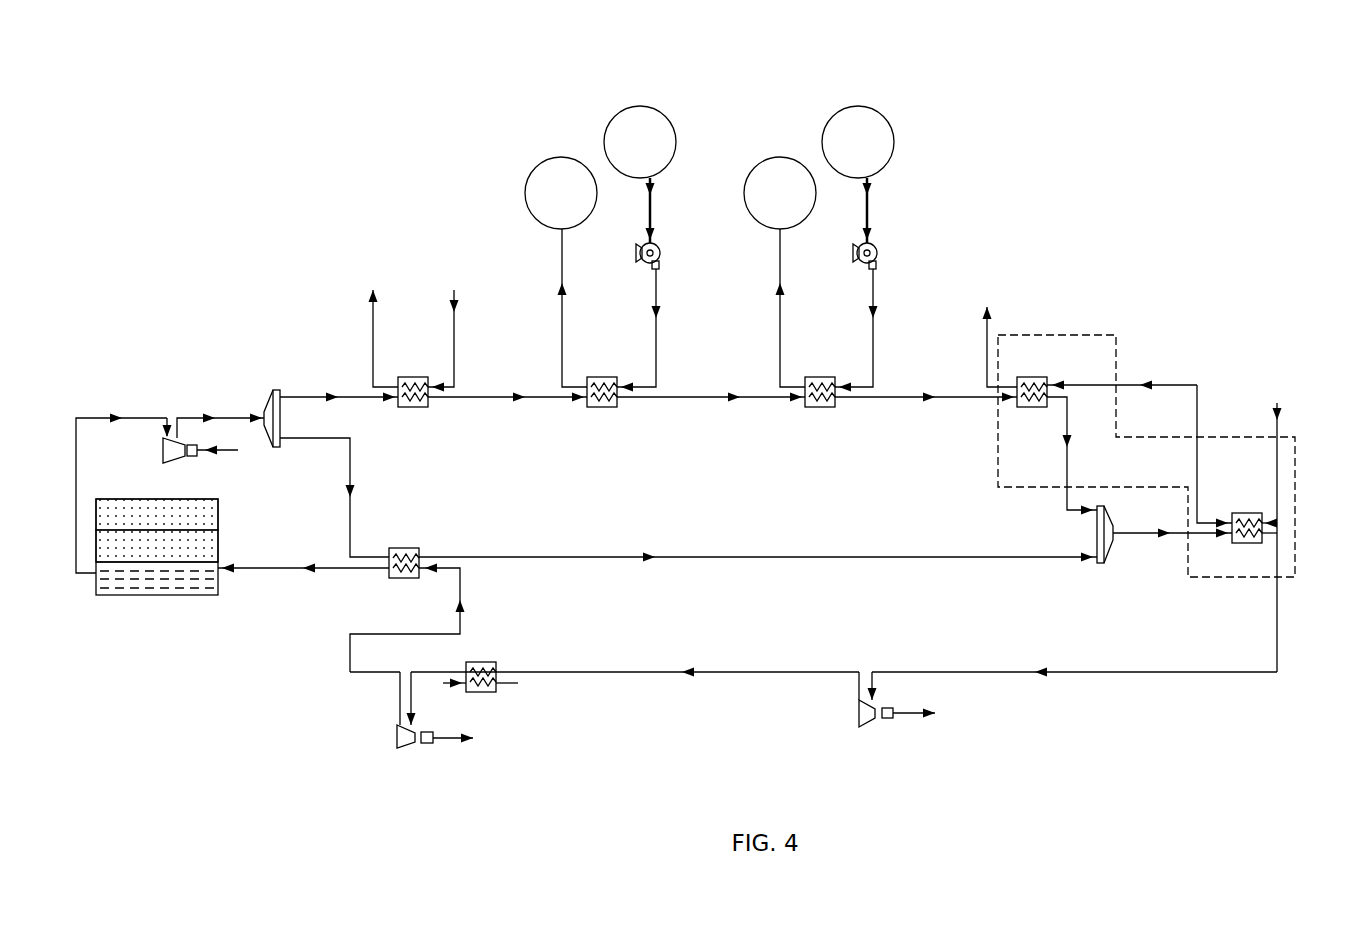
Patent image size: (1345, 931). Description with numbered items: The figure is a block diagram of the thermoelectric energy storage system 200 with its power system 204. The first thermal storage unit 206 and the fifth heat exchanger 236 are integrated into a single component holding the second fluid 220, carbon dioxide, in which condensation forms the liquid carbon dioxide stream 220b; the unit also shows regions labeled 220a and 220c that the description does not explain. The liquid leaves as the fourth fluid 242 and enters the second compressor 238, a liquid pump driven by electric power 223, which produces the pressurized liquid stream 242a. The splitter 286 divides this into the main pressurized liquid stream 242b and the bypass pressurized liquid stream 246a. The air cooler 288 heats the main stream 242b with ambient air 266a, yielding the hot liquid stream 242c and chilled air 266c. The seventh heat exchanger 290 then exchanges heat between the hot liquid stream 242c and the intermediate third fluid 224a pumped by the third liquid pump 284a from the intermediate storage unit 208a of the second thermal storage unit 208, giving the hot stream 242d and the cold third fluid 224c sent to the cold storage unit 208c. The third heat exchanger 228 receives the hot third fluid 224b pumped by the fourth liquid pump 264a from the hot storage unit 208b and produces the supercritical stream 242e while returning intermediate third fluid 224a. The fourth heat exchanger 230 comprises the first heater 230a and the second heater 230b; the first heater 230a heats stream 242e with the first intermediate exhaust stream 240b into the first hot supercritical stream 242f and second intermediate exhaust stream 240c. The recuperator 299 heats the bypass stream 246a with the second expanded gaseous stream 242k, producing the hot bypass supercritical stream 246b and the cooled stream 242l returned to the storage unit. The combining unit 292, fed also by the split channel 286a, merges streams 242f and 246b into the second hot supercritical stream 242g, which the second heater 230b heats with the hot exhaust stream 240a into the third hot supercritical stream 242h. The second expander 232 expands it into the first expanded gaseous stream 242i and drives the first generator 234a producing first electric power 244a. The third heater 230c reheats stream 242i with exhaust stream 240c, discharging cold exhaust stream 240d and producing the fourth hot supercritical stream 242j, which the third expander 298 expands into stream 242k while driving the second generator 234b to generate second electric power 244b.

The thermoelectric energy storage system 200 is at (1223, 153).
The power system 204 is at (845, 465).
The first thermal storage unit 206 is at (174, 588).
The fifth heat exchanger 236 is at (172, 598).
The second thermal storage unit 208 is at (562, 157).
The intermediate storage unit 208a is at (710, 167).
The hot storage unit 208b is at (858, 142).
The cold storage unit 208c is at (561, 193).
The second fluid 220 is at (211, 569).
The liquid fuel 220a is at (125, 592).
The liquid CO2 stream 220b is at (131, 561).
The fuel layer 220c is at (131, 528).
The electric power 223 is at (235, 452).
The intermediate third fluid 224a is at (652, 193).
The hot third fluid 224b is at (870, 193).
The cold third fluid 224c is at (558, 288).
The third heat exchanger 228 is at (825, 377).
The fourth heat exchanger 230 is at (1096, 334).
The first heater 230a is at (1025, 377).
The second heater 230b is at (1248, 513).
The third heater 230c is at (480, 662).
The second expander 232 is at (857, 718).
The first generator 234a is at (890, 720).
The second generator 234b is at (428, 745).
The second compressor 238 is at (162, 450).
The hot exhaust stream 240a is at (1270, 412).
The first intermediate exhaust stream 240b is at (1140, 380).
The second intermediate exhaust stream 240c is at (980, 315).
The cold exhaust stream 240d is at (508, 685).
The fourth fluid 242 is at (118, 410).
The pressurized liquid CO2 stream 242a is at (215, 410).
The main pressurized liquid CO2 stream 242b is at (333, 390).
The hot liquid CO2 stream 242c is at (520, 402).
The hot CO2 stream 242d is at (733, 402).
The supercritical CO2 stream 242e is at (927, 402).
The first hot supercritical CO2 stream 242f is at (1062, 440).
The second hot supercritical CO2 stream 242g is at (1160, 530).
The third hot supercritical CO2 stream 242h is at (1038, 680).
The first expanded gaseous CO2 stream 242i is at (680, 670).
The fourth hot supercritical CO2 stream 242j is at (418, 725).
The second expanded gaseous CO2 stream 242k is at (455, 600).
The cooled second expanded gaseous CO2 stream 242l is at (310, 562).
The first electric power 244a is at (910, 715).
The second electric power 244b is at (450, 745).
The bypass pressurized liquid CO2 stream 246a is at (356, 490).
The hot bypass supercritical CO2 stream 246b is at (650, 553).
The fourth liquid pump 264a is at (853, 250).
The ambient air 266a is at (450, 300).
The chilled air 266c is at (362, 300).
The third liquid pump 284a is at (636, 250).
The splitter 286 is at (278, 390).
The split channel 286a is at (790, 555).
The air cooler 288 is at (423, 377).
The seventh heat exchanger 290 is at (608, 377).
The combining unit 292 is at (1113, 545).
The third expander 298 is at (395, 735).
The recuperator 299 is at (407, 548).